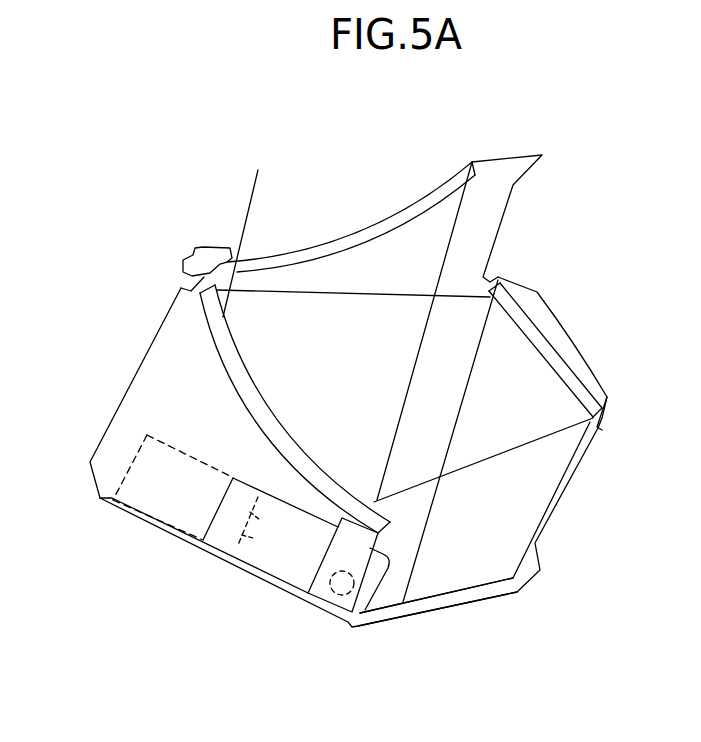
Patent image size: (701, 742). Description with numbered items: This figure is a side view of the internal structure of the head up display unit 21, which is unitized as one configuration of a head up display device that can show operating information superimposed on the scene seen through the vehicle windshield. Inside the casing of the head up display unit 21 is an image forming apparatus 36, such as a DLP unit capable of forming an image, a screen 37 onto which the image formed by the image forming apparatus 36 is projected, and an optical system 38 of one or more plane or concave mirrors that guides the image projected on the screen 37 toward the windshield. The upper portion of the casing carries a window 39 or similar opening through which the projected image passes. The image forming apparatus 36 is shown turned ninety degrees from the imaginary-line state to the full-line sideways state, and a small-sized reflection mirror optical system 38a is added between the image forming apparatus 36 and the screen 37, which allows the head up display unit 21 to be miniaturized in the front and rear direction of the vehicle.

The head up display unit 21 is at (505, 147).
The window 39 is at (385, 215).
The optical system 38 is at (237, 388).
The image forming apparatus 36 is at (150, 530).
The optical system 38a is at (320, 560).
The screen 37 is at (477, 602).